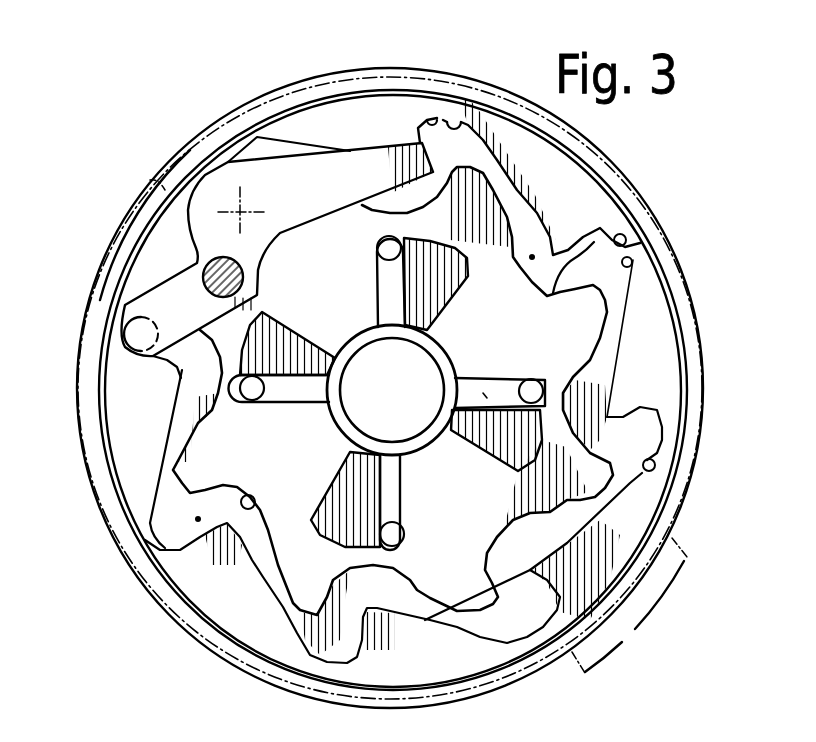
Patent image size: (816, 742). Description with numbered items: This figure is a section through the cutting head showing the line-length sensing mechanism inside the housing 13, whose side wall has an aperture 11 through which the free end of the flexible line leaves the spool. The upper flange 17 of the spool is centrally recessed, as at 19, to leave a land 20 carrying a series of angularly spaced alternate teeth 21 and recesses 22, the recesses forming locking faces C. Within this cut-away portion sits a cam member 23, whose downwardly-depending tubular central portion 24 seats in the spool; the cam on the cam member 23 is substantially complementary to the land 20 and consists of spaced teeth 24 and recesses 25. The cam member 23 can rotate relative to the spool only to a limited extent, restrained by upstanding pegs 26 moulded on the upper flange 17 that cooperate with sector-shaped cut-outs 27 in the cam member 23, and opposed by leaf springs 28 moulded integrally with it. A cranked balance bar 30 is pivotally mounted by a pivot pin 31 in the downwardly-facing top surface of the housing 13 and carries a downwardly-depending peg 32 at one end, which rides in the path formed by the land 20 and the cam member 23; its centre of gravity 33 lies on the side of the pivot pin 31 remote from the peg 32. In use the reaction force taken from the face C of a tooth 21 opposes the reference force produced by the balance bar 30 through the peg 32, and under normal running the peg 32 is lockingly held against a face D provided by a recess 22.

The aperture 11 is at (177, 164).
The housing 13 is at (283, 85).
The upper flange 17 is at (368, 84).
The central recess 19 is at (533, 255).
The land 20 is at (651, 363).
The teeth 21 is at (640, 407).
The recesses 22 is at (460, 125).
The cam member 23 is at (478, 504).
The tubular central portion 24 is at (375, 424).
The recesses 25 is at (255, 500).
The upstanding pegs 26 is at (528, 380).
The sector-shaped cut-outs 27 is at (387, 268).
The leaf springs 28 is at (483, 393).
The balance bar 30 is at (305, 199).
The pivot pin 31 is at (198, 264).
The peg 32 is at (140, 332).
The centre of gravity 33 is at (240, 213).
The face D is at (432, 118).
The locking faces C is at (108, 556).